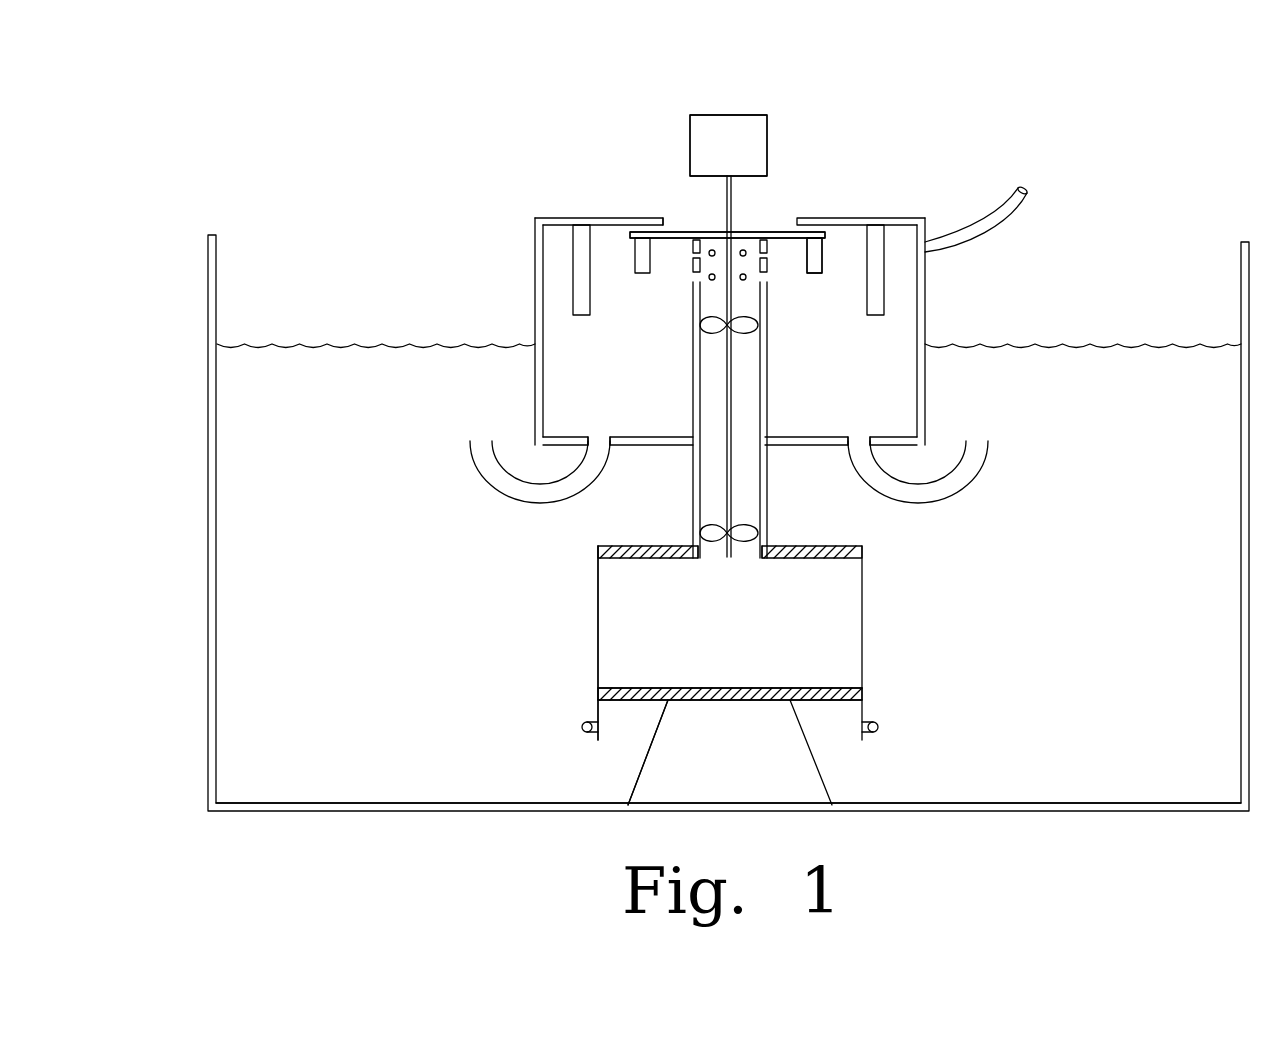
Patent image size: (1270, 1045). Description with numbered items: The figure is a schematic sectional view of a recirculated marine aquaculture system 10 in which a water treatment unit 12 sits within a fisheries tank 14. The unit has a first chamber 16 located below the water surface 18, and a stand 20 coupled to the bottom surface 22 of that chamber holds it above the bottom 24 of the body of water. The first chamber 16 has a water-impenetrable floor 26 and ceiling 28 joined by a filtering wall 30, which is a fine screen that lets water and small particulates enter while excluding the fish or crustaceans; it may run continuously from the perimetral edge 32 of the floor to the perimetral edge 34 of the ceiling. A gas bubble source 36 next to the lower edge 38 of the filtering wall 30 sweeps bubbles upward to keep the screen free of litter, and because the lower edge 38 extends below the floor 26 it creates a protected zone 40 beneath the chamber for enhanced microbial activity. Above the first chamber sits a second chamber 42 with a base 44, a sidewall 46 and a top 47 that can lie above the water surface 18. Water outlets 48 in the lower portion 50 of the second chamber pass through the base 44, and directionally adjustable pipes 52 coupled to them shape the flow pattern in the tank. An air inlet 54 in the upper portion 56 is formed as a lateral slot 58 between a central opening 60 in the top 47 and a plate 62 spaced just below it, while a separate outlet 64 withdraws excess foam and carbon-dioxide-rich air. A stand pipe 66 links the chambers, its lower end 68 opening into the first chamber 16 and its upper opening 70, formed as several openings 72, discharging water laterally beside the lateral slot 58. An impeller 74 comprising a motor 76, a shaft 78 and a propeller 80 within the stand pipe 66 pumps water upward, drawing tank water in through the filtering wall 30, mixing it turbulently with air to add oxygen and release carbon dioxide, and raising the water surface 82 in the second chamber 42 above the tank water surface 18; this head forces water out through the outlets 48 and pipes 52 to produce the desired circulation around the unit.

The recirculated marine aquaculture system 10 is at (247, 121).
The water treatment unit 12 is at (753, 337).
The fisheries tank 14 is at (217, 286).
The first chamber 16 is at (729, 611).
The water surface 18 is at (378, 344).
The stand 20 is at (655, 778).
The bottom surface 22 is at (648, 700).
The bottom 24 is at (407, 803).
The floor 26 is at (730, 691).
The ceiling 28 is at (614, 546).
The filtering wall 30 is at (598, 606).
The perimetral edge 32 is at (862, 694).
The perimetral edge 34 is at (860, 547).
The gas bubble source 36 is at (880, 727).
The lower edge 38 is at (582, 727).
The protected zone 40 is at (830, 736).
The second chamber 42 is at (550, 268).
The base 44 is at (787, 446).
The sidewall 46 is at (925, 320).
The top 47 is at (898, 218).
The water outlet 48 is at (599, 443).
The lower portion 50 is at (548, 406).
The directionally adjustable pipe 52 is at (520, 499).
The air inlet 54 is at (787, 221).
The upper portion 56 is at (543, 240).
The lateral slot 58 is at (650, 222).
The central opening 60 is at (660, 231).
The plate 62 is at (745, 202).
The outlet 64 is at (992, 231).
The stand pipe 66 is at (765, 391).
The lower end 68 is at (703, 559).
The upper opening 70 is at (780, 250).
The openings 72 is at (700, 275).
The impeller 74 is at (691, 299).
The motor 76 is at (745, 128).
The shaft 78 is at (727, 370).
The propeller 80 is at (764, 326).
The water surface 82 is at (902, 316).